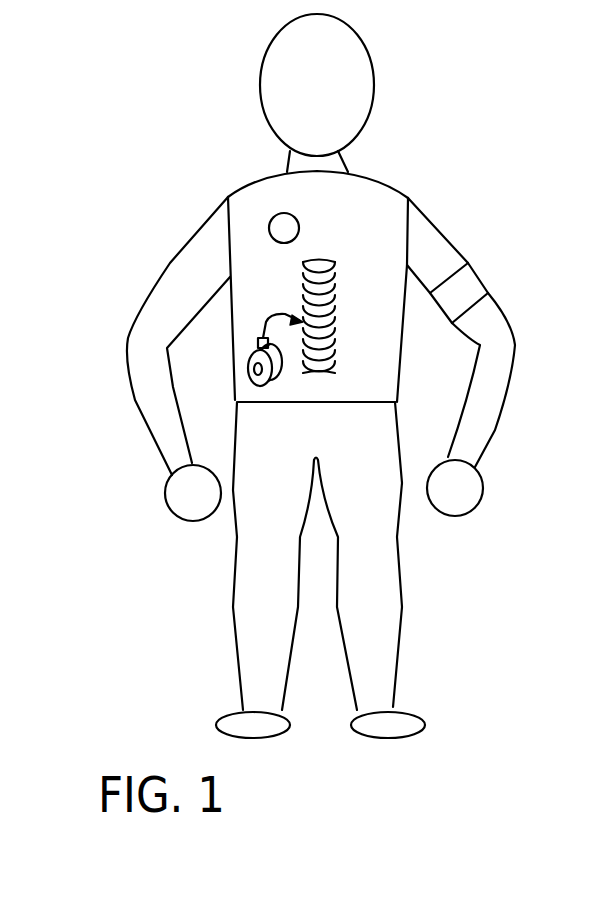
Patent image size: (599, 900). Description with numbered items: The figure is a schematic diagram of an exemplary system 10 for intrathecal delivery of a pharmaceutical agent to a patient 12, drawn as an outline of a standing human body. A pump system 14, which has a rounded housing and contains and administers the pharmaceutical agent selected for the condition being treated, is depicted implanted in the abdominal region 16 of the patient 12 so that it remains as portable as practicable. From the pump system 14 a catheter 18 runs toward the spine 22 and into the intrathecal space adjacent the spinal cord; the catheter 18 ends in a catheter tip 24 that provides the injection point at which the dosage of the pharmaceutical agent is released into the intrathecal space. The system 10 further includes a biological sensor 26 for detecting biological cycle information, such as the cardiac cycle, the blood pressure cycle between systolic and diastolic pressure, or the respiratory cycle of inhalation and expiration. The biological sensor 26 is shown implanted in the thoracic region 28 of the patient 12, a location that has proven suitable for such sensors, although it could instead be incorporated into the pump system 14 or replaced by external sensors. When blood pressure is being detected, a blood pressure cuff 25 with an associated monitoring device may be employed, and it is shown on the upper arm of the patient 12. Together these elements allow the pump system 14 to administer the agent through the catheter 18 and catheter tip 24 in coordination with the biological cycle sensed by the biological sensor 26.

The system for intrathecal delivery of a pharmaceutical agent 10 is at (245, 308).
The patient 12 is at (365, 272).
The pump system 14 is at (248, 369).
The abdominal region 16 is at (375, 386).
The catheter 18 is at (272, 310).
The spine 22 is at (337, 313).
The catheter tip 24 is at (375, 259).
The blood pressure cuff 25 is at (480, 275).
The biological sensor 26 is at (275, 213).
The thoracic region 28 is at (392, 238).